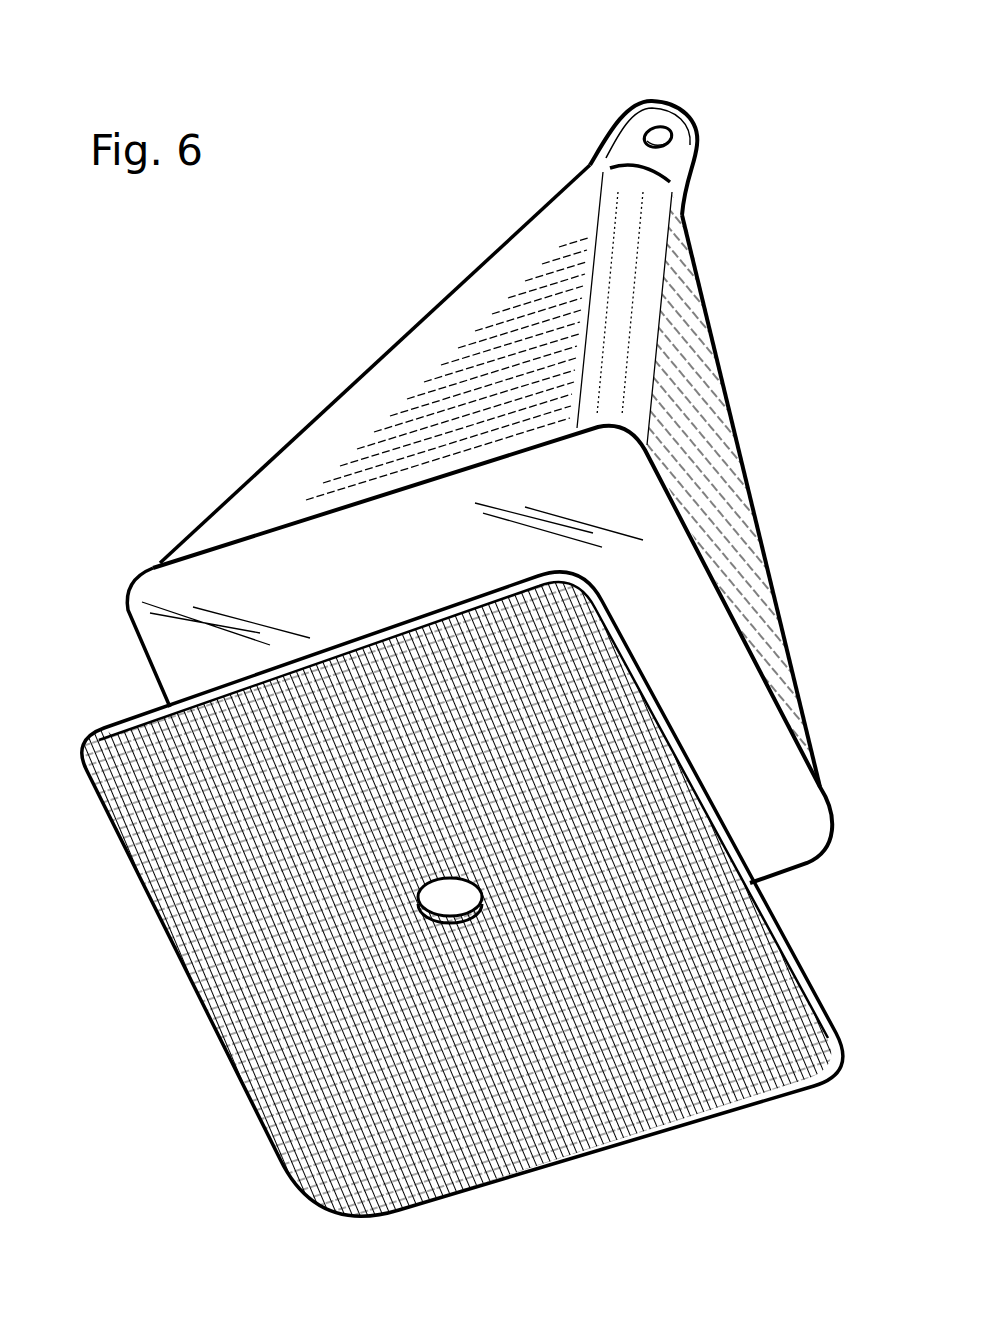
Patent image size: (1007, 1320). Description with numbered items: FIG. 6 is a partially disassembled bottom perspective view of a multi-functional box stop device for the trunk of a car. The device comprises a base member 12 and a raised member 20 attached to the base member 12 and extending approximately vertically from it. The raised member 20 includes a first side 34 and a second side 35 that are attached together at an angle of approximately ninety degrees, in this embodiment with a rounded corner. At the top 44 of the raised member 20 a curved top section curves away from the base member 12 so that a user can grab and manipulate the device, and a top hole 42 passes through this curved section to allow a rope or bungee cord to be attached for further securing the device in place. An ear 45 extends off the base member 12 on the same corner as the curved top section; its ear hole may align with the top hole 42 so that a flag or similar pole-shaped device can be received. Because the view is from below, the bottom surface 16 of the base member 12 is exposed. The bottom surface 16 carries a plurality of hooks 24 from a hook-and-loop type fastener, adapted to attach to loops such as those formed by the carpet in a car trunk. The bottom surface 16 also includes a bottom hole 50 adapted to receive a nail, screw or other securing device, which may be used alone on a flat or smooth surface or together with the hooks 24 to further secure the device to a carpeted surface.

The base member 12 is at (152, 572).
The bottom surface 16 is at (392, 574).
The raised member 20 is at (794, 398).
The hooks 24 is at (108, 726).
The first side 34 is at (402, 372).
The second side 35 is at (710, 335).
The top hole 42 is at (660, 128).
The top 44 is at (660, 70).
The ear 45 is at (672, 379).
The bottom hole 50 is at (437, 903).